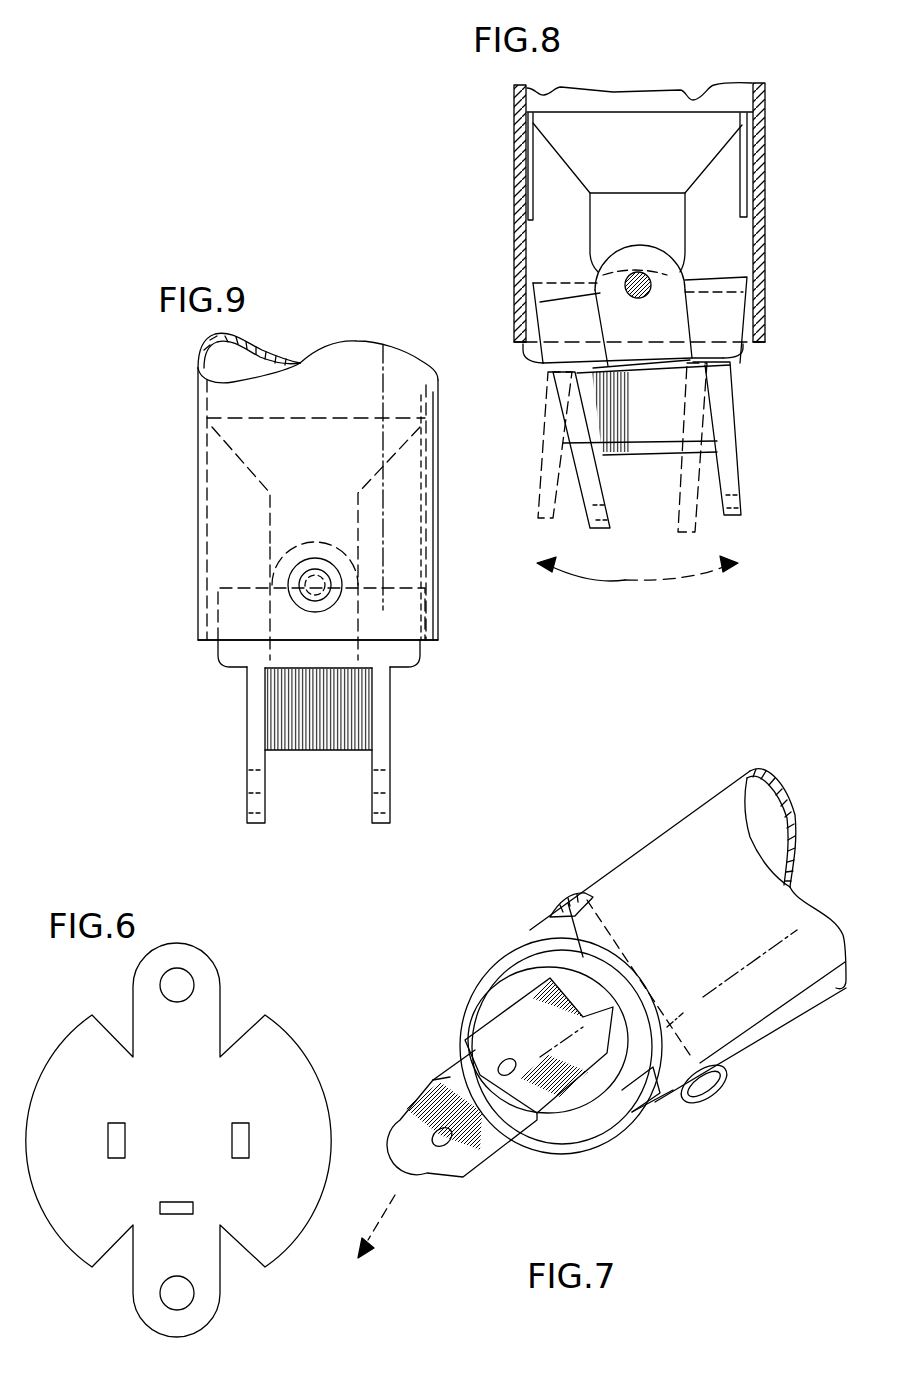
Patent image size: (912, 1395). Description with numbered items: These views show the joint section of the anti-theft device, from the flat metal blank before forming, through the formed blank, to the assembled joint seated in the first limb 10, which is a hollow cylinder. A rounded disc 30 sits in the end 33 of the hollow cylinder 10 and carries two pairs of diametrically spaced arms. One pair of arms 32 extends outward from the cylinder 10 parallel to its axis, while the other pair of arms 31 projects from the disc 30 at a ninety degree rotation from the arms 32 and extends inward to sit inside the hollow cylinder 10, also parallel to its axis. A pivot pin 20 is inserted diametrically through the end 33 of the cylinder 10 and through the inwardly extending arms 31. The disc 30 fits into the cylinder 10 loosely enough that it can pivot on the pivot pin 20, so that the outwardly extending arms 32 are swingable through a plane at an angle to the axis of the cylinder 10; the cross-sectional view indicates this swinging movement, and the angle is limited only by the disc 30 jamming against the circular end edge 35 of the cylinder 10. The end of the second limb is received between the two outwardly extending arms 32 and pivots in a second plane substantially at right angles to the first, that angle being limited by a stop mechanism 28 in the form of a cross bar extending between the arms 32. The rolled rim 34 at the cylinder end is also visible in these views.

In FIG. 8, the first limb 10 is at (514, 150).
In FIG. 9, the first limb 10 is at (198, 506).
In FIG. 7, the first limb 10 is at (813, 998).
In FIG. 8, the pivot pin 20 is at (652, 291).
In FIG. 9, the pivot pin 20 is at (290, 584).
In FIG. 7, the pivot pin 20 is at (710, 1100).
In FIG. 7, the stop mechanism 28 is at (450, 1077).
In FIG. 8, the rounded disc 30 is at (733, 370).
In FIG. 9, the rounded disc 30 is at (415, 668).
In FIG. 7, the rounded disc 30 is at (607, 1150).
In FIG. 8, the inwardly extending arms 31 is at (667, 323).
In FIG. 9, the inwardly extending arms 31 is at (340, 615).
In FIG. 7, the inwardly extending arms 31 is at (539, 1045).
In FIG. 8, the outwardly extending arms 32 is at (591, 530).
In FIG. 9, the outwardly extending arms 32 is at (372, 815).
In FIG. 7, the outwardly extending arms 32 is at (513, 1153).
In FIG. 8, the end of the cylinder 33 is at (514, 320).
In FIG. 9, the end of the cylinder 33 is at (198, 613).
In FIG. 7, the end of the cylinder 33 is at (550, 917).
In FIG. 8, the rolled rim 34 is at (727, 109).
In FIG. 9, the rolled rim 34 is at (198, 416).
In FIG. 7, the rolled rim 34 is at (682, 913).
In FIG. 8, the circular end edge 35 is at (531, 347).
In FIG. 9, the circular end edge 35 is at (207, 641).
In FIG. 7, the circular end edge 35 is at (647, 1120).